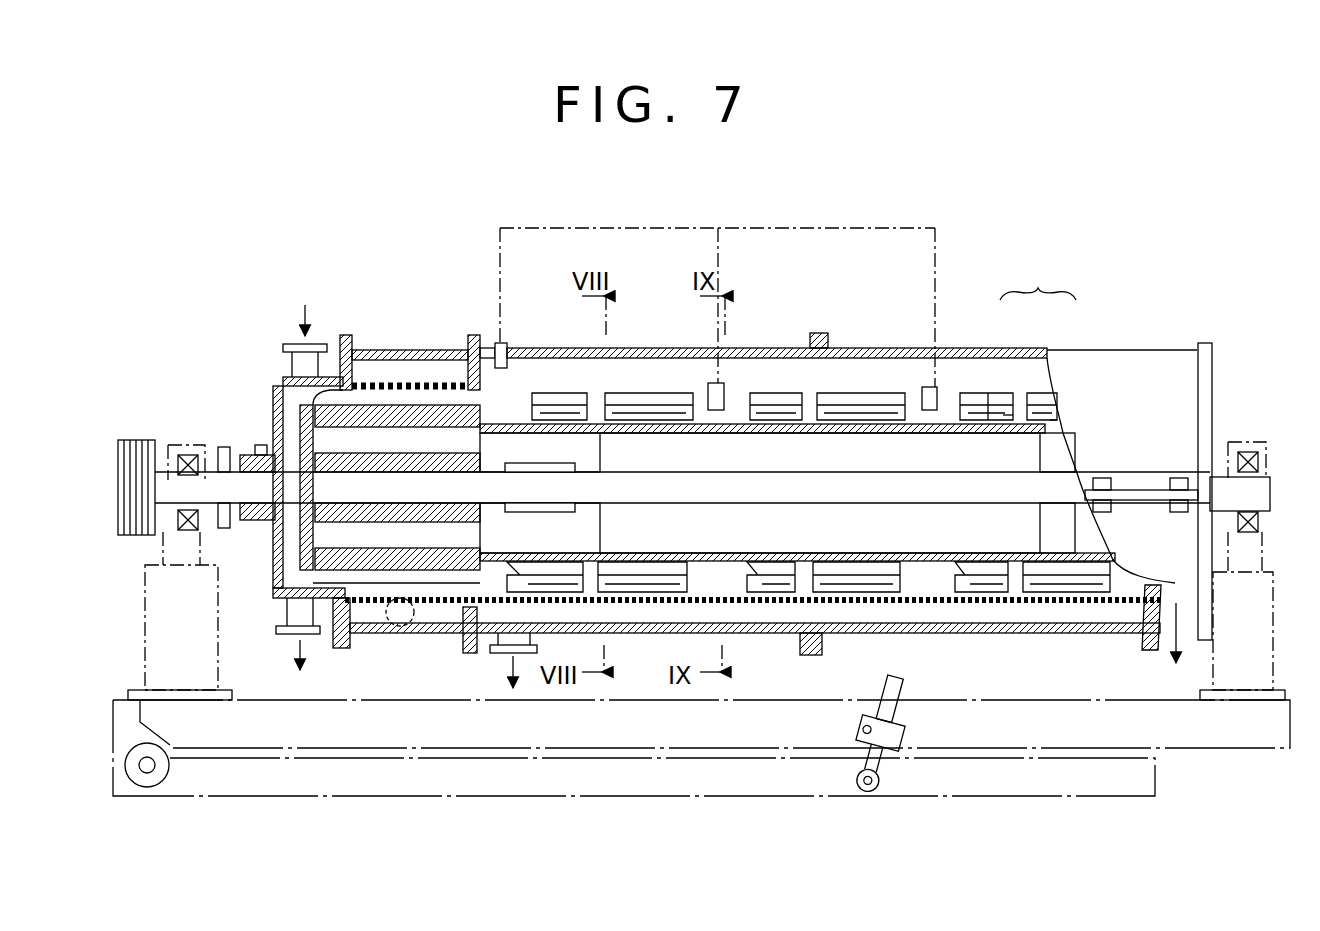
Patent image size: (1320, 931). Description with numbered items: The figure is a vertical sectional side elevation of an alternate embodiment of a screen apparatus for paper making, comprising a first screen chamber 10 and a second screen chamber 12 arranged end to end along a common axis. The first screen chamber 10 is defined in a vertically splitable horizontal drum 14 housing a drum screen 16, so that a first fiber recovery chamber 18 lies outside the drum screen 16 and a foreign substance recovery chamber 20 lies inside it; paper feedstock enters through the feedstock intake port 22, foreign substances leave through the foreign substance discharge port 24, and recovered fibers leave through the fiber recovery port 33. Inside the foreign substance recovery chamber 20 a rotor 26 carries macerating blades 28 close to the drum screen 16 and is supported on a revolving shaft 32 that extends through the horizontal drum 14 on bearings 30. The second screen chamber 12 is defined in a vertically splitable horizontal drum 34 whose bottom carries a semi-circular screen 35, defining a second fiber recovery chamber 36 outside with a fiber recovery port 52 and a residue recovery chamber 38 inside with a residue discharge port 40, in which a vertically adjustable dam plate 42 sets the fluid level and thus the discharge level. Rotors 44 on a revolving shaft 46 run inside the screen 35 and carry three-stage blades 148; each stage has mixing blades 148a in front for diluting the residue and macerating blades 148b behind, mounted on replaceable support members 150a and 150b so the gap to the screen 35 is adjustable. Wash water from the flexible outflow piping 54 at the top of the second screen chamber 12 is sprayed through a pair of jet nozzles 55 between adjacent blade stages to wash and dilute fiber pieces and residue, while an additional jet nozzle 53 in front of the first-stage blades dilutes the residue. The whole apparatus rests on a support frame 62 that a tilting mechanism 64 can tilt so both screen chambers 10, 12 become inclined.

The first screen chamber 10 is at (428, 336).
The second screen chamber 12 is at (850, 350).
The horizontal drum 14 is at (405, 350).
The drum screen 16 is at (378, 383).
The first fiber recovery chamber 18 is at (455, 365).
The foreign substance recovery chamber 20 is at (305, 598).
The feedstock intake port 22 is at (295, 344).
The foreign substance discharge port 24 is at (290, 630).
The rotor 26 is at (300, 566).
The macerating blades 28 is at (425, 600).
The bearings 30 is at (186, 452).
The revolving shaft 32 is at (215, 485).
The fiber recovery port 33 is at (392, 626).
The horizontal drum 34 is at (648, 352).
The screen 35 is at (660, 605).
The second fiber recovery chamber 36 is at (742, 625).
The residue recovery chamber 38 is at (937, 585).
The residue discharge port 40 is at (1157, 655).
The dam plate 42 is at (1168, 583).
The rotors 44 is at (600, 448).
The revolving shaft 46 is at (780, 505).
The fiber recovery port 52 is at (500, 655).
The jet nozzle 53 is at (503, 343).
The outflow pipe means 54 is at (822, 228).
The jet nozzles 55 is at (726, 395).
The support frame 62 is at (1175, 752).
The tilting mechanism 64 is at (900, 736).
The blades 148 is at (831, 358).
The mixing blades 148a is at (530, 405).
The macerating blades 148b is at (612, 378).
The support members 150a is at (530, 410).
The support members 150b is at (688, 422).